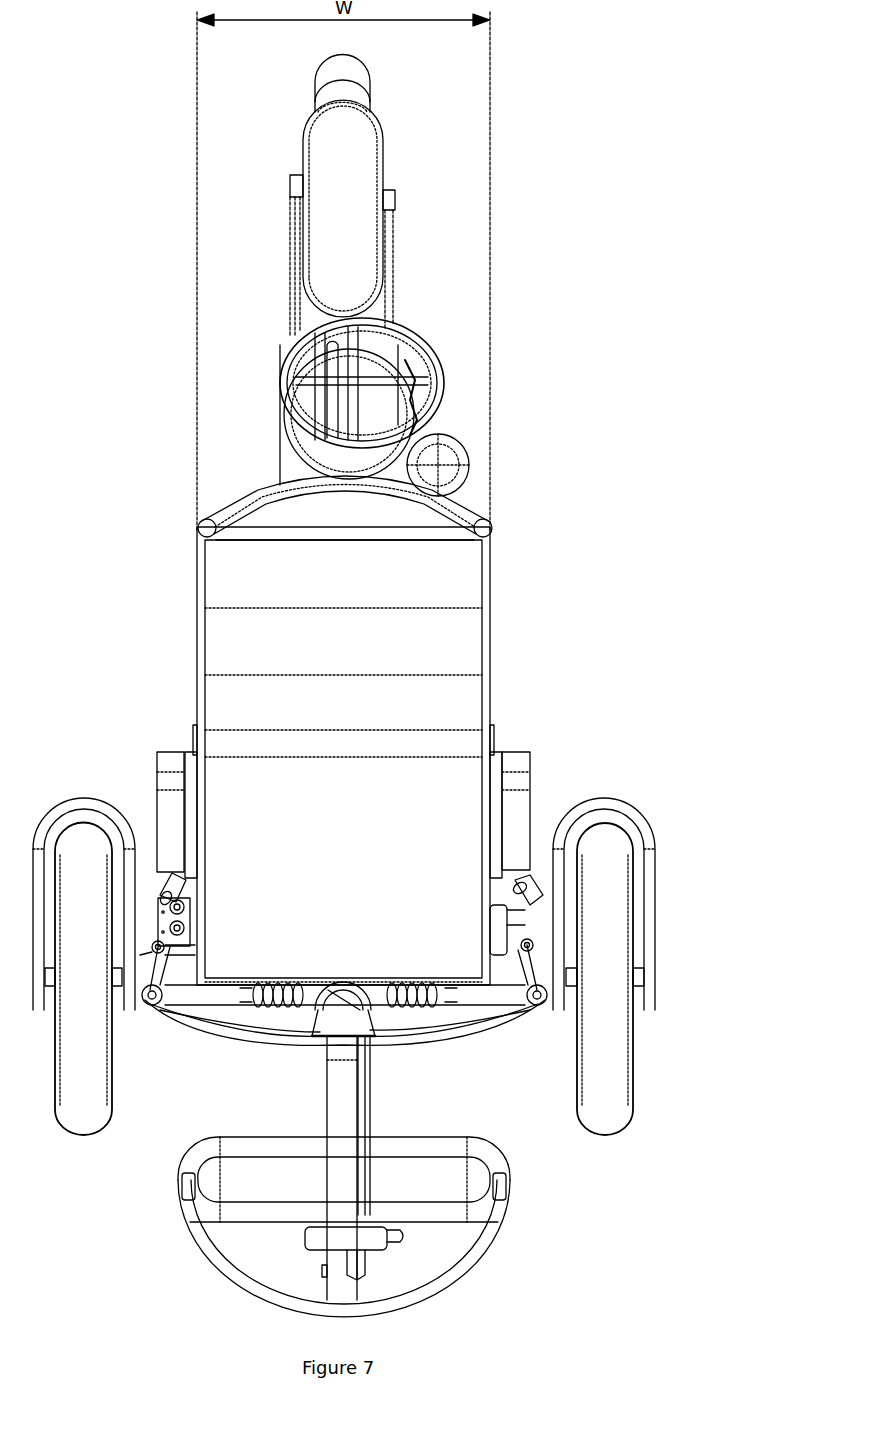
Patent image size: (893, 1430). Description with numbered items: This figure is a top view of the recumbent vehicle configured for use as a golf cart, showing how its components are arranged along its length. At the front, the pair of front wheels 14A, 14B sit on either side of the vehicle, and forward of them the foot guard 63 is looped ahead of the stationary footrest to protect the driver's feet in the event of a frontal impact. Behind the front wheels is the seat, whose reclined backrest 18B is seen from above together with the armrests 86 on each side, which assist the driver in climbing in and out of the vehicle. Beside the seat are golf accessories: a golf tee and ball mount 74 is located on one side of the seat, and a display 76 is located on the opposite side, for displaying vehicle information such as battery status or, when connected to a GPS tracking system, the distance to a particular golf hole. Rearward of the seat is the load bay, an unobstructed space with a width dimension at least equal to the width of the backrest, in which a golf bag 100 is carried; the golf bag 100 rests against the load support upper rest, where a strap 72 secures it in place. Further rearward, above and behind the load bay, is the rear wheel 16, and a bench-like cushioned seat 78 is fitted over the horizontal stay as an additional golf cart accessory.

The rear wheel 16 is at (367, 68).
The bench-like cushioned seat 78 is at (362, 173).
The golf bag 100 is at (305, 407).
The strap 72 is at (420, 466).
The reclined backrest 18B is at (467, 572).
The armrests 86 is at (170, 757).
The golf tee and ball mount 74 is at (172, 875).
The display 76 is at (505, 925).
The front wheel 14B is at (82, 1115).
The front wheel 14A is at (608, 1115).
The foot guard 63 is at (447, 1300).